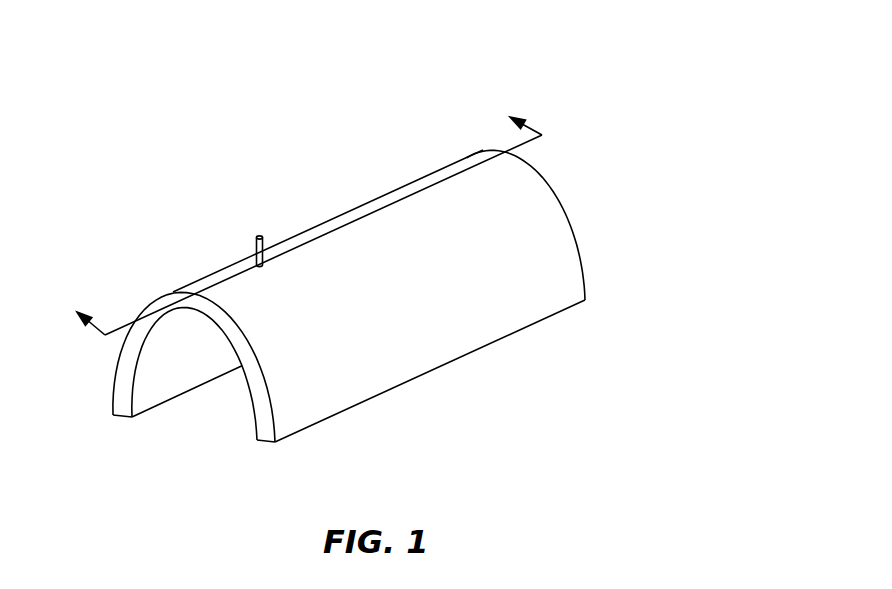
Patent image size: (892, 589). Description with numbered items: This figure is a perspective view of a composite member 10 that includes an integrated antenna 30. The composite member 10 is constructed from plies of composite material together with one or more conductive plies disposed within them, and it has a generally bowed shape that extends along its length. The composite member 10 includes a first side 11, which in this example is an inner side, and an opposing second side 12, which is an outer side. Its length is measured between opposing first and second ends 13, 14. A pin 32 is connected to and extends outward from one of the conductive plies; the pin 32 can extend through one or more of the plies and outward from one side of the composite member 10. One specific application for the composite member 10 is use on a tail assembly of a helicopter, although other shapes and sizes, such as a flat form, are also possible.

The composite member 10 is at (354, 237).
The first side 11 is at (148, 387).
The second side 12 is at (553, 265).
The first end 13 is at (122, 400).
The second end 14 is at (578, 242).
The integrated antenna 30 is at (272, 227).
The pin 32 is at (255, 237).